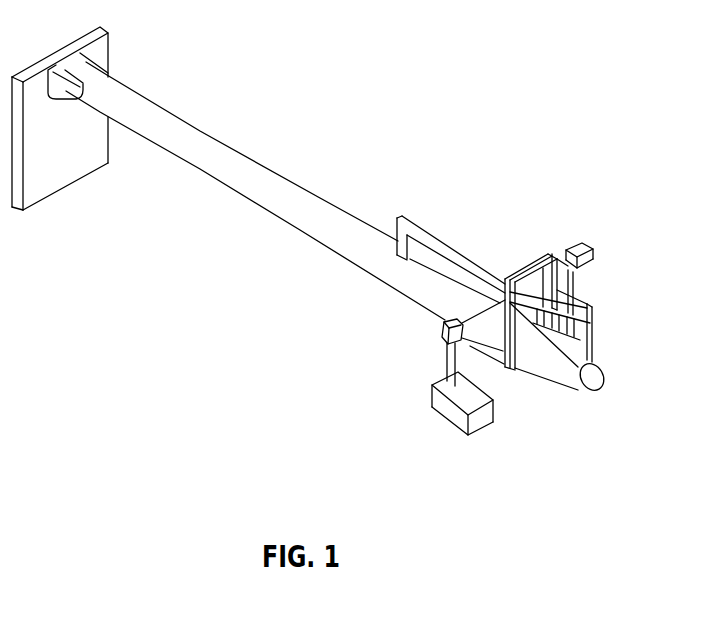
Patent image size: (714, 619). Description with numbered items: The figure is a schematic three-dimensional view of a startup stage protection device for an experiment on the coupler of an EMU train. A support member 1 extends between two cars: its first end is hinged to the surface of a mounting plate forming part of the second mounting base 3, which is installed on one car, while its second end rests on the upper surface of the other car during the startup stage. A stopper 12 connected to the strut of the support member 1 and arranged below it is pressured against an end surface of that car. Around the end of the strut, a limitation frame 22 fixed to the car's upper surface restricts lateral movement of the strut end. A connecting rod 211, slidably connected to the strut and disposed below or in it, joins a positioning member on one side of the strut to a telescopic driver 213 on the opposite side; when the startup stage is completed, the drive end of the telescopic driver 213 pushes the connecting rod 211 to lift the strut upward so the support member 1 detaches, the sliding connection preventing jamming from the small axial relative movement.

The support member 1 is at (347, 237).
The second mounting base 3 is at (43, 178).
The stopper 12 is at (442, 336).
The limitation frame 22 is at (495, 297).
The connecting rod 211 is at (586, 250).
The telescopic driver 213 is at (430, 404).